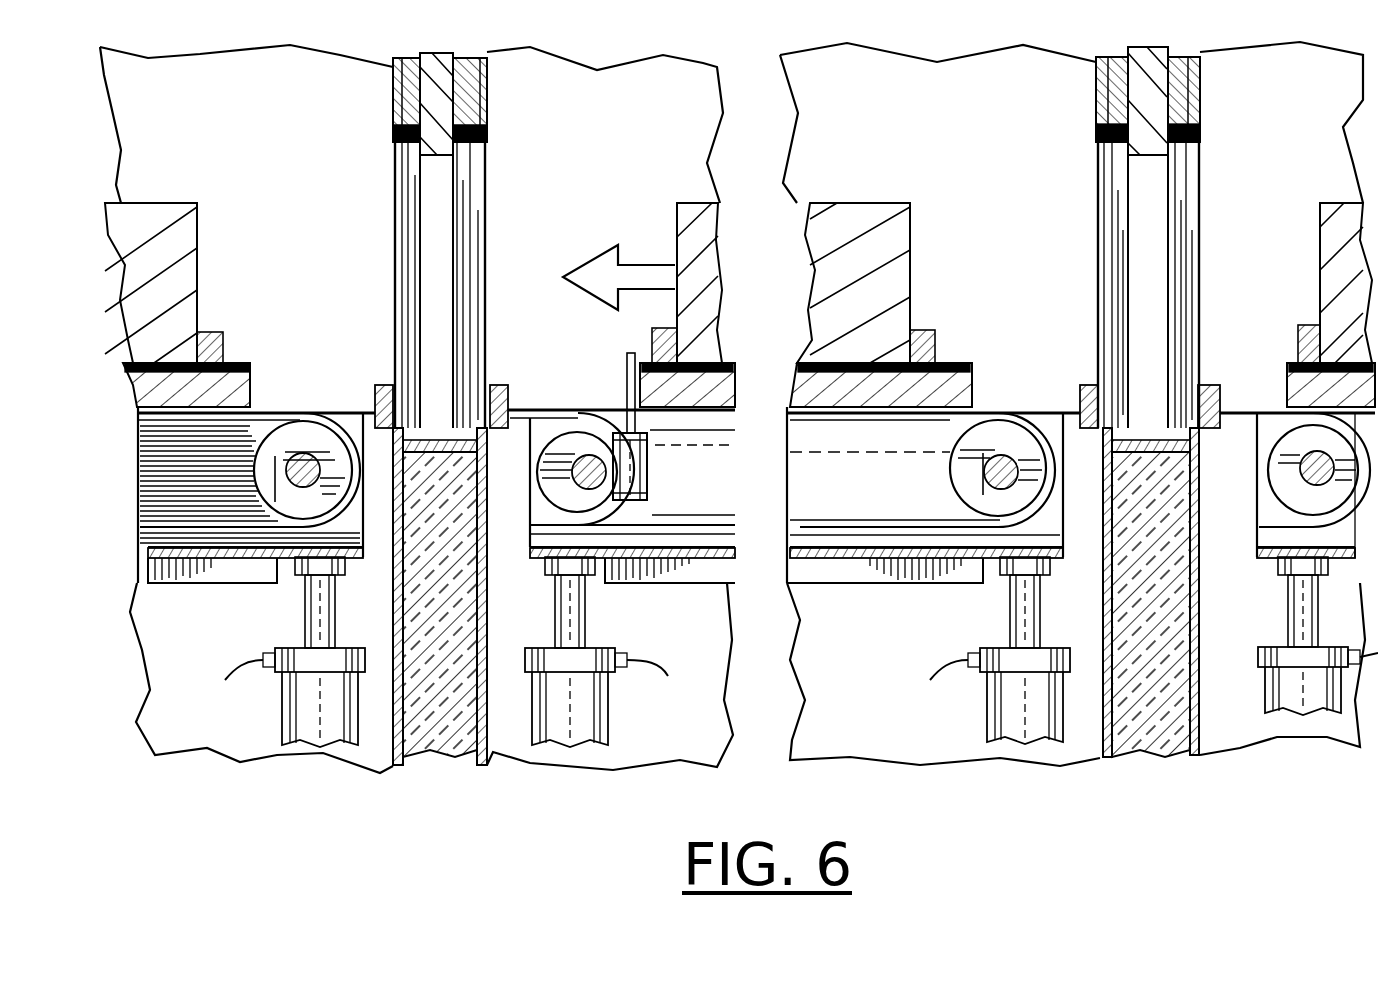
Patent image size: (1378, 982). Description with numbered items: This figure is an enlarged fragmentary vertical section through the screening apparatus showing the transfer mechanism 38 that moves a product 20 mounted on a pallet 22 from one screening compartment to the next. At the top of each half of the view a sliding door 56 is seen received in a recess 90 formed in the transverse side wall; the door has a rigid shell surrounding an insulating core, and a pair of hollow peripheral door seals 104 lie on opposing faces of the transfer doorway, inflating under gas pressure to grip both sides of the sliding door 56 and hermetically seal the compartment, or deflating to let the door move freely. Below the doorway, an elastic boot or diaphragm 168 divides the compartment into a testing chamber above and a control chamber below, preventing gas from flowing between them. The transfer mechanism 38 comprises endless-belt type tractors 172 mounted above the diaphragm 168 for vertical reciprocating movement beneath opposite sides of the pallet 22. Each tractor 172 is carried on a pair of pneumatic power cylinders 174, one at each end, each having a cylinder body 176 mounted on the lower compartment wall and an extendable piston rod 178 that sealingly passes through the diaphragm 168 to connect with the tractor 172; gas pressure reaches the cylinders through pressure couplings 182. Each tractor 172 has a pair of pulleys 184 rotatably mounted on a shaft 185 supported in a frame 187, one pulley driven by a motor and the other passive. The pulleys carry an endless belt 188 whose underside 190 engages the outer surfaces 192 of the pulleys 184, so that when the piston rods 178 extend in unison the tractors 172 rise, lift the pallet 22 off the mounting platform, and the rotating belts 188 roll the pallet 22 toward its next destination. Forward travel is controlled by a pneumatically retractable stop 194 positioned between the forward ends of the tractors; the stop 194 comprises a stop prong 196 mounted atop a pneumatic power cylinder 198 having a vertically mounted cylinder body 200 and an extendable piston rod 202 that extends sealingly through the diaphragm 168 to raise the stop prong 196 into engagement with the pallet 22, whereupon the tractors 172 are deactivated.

The product 20 is at (918, 266).
The pallet 22 is at (958, 352).
The transfer mechanism 38 is at (515, 485).
The sliding door 56 is at (1188, 100).
The recess 90 is at (1168, 240).
The peripheral door seal 104 is at (1128, 148).
The elastic boot or diaphragm 168 is at (1055, 410).
The tractor 172 is at (1052, 515).
The pneumatic power cylinder 174 is at (975, 730).
The cylinder body 176 is at (990, 695).
The piston rod 178 is at (1008, 600).
The pressure coupling 182 is at (950, 655).
The pulley 184 is at (588, 454).
The shaft 185 is at (603, 412).
The frame 187 is at (532, 548).
The endless belt 188 is at (984, 405).
The underside 190 is at (948, 420).
The outer surface 192 is at (601, 548).
The retractable stop 194 is at (620, 340).
The stop prong 196 is at (624, 392).
The pneumatic power cylinder 198 is at (655, 500).
The cylinder body 200 is at (648, 471).
The piston rod 202 is at (647, 427).